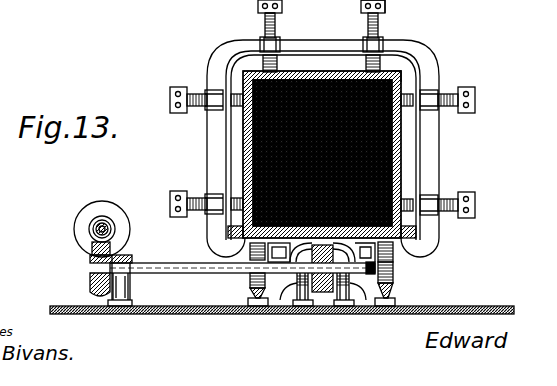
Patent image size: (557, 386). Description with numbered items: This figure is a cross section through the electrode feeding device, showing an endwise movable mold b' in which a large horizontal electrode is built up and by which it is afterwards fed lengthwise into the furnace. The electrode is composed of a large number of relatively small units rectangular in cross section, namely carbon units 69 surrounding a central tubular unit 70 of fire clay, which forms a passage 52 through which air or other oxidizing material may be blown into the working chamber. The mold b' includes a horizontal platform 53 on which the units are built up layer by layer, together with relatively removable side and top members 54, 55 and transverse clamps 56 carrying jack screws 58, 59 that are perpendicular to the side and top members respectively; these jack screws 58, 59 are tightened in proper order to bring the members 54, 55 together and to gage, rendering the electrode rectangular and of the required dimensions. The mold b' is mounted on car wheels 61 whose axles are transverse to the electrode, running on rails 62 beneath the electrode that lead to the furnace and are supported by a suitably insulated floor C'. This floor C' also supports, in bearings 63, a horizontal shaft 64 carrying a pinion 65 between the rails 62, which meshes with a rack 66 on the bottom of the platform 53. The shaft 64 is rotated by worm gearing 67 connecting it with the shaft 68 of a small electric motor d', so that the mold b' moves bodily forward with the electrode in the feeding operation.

The passage 52 is at (245, 130).
The horizontal platform 53 is at (232, 231).
The side members 54 is at (253, 146).
The top member 55 is at (322, 66).
The transverse clamps 56 is at (210, 173).
The jack screws 58 is at (487, 207).
The jack screws 59 is at (361, 4).
The car wheels 61 is at (249, 279).
The rails 62 is at (254, 297).
The bearings 63 is at (118, 315).
The horizontal shaft 64 is at (163, 264).
The pinion 65 is at (325, 292).
The rack 66 is at (308, 245).
The worm gearing 67 is at (92, 287).
The motor shaft 68 is at (88, 232).
The carbon units 69 is at (402, 72).
The central tubular unit 70 is at (428, 162).
The endwise movable mold b' is at (297, 24).
The small electric motor d' is at (110, 203).
The insulated floor C' is at (282, 298).